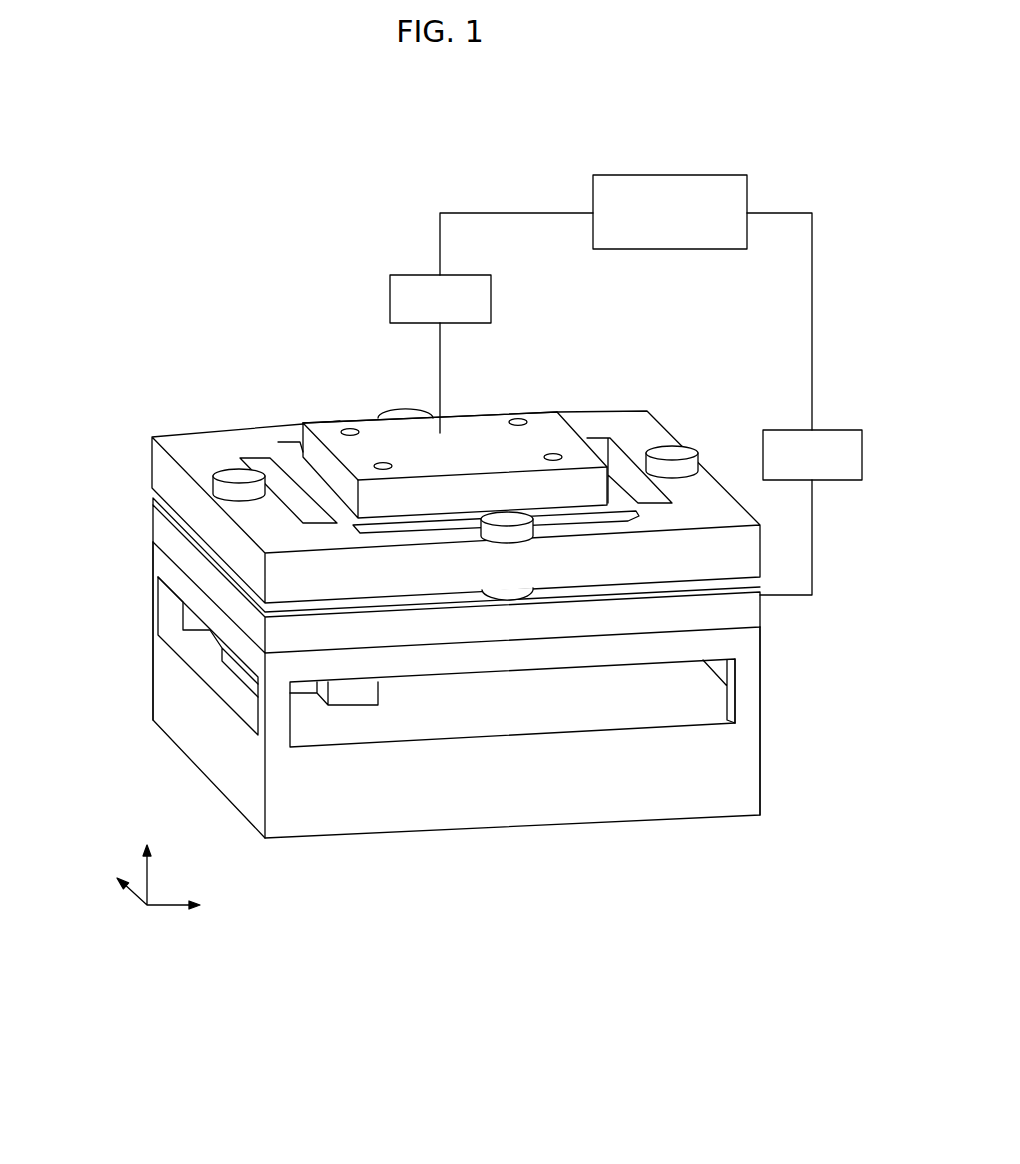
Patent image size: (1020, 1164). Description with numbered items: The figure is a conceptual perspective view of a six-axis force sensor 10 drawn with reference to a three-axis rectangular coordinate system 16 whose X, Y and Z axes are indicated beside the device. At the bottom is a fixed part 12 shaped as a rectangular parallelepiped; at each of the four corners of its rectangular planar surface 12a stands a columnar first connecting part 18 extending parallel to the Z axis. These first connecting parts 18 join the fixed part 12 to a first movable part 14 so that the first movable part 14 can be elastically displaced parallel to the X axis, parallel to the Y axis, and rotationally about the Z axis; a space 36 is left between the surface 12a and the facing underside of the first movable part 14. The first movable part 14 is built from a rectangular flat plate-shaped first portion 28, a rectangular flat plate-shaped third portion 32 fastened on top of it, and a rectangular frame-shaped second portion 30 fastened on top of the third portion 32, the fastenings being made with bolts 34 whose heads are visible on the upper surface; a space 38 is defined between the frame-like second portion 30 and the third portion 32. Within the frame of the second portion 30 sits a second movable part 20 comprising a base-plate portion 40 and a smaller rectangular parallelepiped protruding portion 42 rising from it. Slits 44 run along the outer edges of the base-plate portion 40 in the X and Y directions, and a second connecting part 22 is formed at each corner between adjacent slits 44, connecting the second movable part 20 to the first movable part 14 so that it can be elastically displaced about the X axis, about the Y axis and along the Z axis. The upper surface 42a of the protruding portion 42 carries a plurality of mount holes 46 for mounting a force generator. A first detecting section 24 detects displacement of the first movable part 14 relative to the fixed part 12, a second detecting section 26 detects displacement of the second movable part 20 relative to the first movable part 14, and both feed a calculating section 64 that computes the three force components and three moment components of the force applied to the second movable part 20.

The six-axis force sensor 10 is at (277, 290).
The fixed part 12 is at (660, 830).
The rectangular planar surface 12a is at (457, 723).
The first movable part 14 is at (92, 417).
The three-axis rectangular coordinate system 16 is at (152, 932).
The first connecting part 18 is at (140, 608).
The second movable part 20 is at (360, 416).
The second connecting part 22 is at (261, 439).
The first detecting section 24 is at (804, 404).
The second detecting section 26 is at (491, 323).
The first portion 28 is at (168, 568).
The second portion 30 is at (163, 472).
The third portion 32 is at (162, 528).
The bolt 34 is at (230, 478).
The space 36 is at (662, 707).
The space 38 is at (246, 602).
The base-plate portion 40 is at (307, 480).
The protruding portion 42 is at (422, 432).
The surface 42a is at (548, 413).
The slit 44 is at (627, 467).
The mount hole 46 is at (521, 420).
The calculating section 64 is at (641, 176).